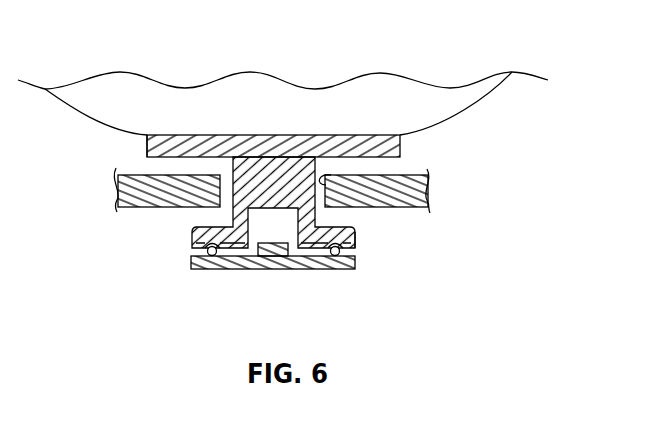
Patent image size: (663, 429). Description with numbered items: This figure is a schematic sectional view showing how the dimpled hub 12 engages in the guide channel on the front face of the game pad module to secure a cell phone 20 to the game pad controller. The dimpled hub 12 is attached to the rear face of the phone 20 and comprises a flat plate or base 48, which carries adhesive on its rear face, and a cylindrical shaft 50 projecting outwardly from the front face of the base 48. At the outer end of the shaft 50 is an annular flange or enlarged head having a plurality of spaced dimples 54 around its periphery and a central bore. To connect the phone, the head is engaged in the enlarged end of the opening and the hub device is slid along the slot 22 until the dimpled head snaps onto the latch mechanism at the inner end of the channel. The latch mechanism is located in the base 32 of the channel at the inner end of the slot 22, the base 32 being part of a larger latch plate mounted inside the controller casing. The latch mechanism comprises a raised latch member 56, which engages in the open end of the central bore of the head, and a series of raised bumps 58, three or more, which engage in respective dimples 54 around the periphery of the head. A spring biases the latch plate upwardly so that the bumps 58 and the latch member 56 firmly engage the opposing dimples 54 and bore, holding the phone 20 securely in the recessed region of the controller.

The phone 20 is at (415, 97).
The dimpled hub 12 is at (401, 155).
The base 48 is at (155, 143).
The cylindrical shaft 50 is at (253, 192).
The dimples 54 is at (353, 238).
The slot 22 is at (331, 175).
The base 32 is at (305, 256).
The raised latch member 56 is at (272, 250).
The raised bumps 58 is at (212, 257).